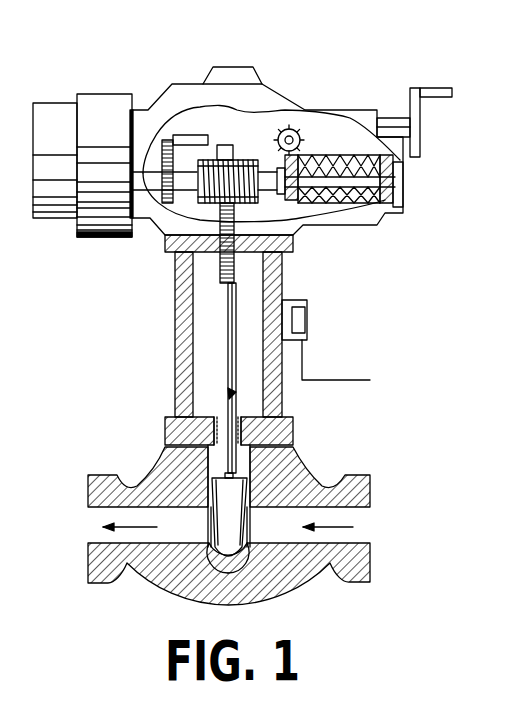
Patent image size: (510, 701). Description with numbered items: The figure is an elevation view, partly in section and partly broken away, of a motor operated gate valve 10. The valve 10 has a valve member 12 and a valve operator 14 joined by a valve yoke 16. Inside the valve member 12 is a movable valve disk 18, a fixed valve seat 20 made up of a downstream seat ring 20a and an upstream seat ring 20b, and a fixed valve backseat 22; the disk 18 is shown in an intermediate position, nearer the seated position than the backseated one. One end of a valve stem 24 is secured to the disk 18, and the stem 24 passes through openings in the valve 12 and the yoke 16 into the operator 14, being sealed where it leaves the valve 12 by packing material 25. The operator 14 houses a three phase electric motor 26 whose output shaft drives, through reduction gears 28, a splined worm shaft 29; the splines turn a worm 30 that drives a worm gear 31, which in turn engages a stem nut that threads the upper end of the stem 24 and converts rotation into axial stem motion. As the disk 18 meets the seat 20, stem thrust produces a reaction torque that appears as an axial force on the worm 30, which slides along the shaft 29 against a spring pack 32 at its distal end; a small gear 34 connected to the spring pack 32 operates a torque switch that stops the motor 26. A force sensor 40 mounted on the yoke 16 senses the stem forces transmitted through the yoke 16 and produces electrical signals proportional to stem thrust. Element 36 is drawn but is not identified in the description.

The motor operated gate valve 10 is at (227, 62).
The valve member 12 is at (370, 548).
The valve operator 14 is at (147, 128).
The valve yoke 16 is at (280, 270).
The valve disk 18 is at (227, 497).
The valve seat 20 is at (252, 490).
The downstream seat ring 20a is at (208, 552).
The upstream seat ring 20b is at (248, 552).
The valve backseat 22 is at (285, 432).
The valve stem 24 is at (227, 387).
The packing material 25 is at (240, 413).
The motor 26 is at (95, 108).
The reduction gears 28 is at (152, 128).
The worm shaft 29 is at (192, 135).
The worm 30 is at (262, 153).
The worm gear 31 is at (247, 153).
The spring pack 32 is at (333, 153).
The gear 34 is at (300, 130).
The lever bracket 36 is at (427, 88).
The force sensor 40 is at (307, 317).